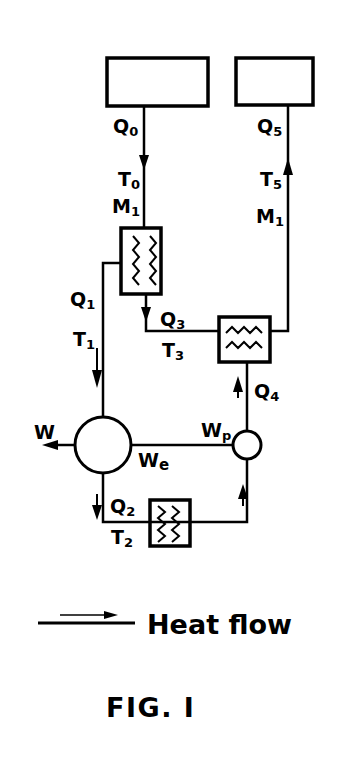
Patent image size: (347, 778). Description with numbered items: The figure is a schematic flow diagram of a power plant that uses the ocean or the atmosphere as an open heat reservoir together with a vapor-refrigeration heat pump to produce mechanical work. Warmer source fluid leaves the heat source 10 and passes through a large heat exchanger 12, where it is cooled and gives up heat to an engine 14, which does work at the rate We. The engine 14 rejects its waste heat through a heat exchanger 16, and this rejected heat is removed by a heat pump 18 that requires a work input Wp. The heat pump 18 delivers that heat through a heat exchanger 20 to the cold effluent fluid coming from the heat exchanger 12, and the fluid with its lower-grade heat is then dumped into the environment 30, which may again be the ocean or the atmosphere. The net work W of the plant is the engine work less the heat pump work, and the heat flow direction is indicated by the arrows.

The heat source 10 is at (140, 57).
The environment 30 is at (257, 57).
The heat exchanger 12 is at (163, 241).
The heat exchanger 20 is at (232, 315).
The engine 14 is at (129, 421).
The heat pump 18 is at (262, 437).
The heat exchanger 16 is at (193, 537).